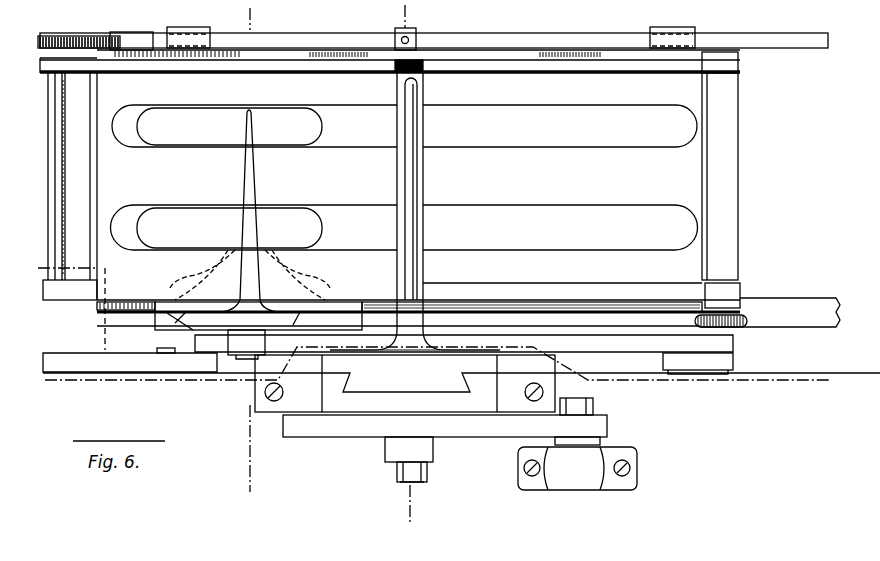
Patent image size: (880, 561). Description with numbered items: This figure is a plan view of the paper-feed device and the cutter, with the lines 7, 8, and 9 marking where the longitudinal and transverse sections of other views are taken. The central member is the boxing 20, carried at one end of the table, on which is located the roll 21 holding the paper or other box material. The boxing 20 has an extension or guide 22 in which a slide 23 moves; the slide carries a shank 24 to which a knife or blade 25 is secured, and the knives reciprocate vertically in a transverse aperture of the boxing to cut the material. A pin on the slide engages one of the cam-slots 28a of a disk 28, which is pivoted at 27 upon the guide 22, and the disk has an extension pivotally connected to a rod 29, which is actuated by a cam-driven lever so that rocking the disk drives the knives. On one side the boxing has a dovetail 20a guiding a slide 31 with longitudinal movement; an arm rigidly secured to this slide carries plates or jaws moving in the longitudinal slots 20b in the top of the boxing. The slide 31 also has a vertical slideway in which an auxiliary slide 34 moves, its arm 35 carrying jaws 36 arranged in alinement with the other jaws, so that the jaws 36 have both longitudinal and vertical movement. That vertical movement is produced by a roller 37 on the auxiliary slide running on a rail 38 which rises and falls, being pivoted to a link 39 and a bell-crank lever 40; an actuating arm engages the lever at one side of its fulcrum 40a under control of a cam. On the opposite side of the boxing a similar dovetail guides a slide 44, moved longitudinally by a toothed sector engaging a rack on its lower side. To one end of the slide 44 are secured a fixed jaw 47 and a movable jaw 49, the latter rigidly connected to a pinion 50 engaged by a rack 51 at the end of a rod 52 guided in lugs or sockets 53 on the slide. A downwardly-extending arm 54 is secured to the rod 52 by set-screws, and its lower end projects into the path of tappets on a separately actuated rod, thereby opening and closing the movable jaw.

The section line 7 7 is at (432, 321).
The section line 8 8 is at (415, 269).
The section line 9 9 is at (257, 255).
The boxing 20 is at (418, 215).
The dovetail 20a is at (401, 130).
The longitudinal slots 20b is at (653, 177).
The roll 21 is at (740, 240).
The extension or guide 22 is at (484, 405).
The slide 23 is at (461, 383).
The shank 24 is at (410, 268).
The knife or blade 25 is at (422, 233).
The pivot 27 is at (415, 470).
The disk 28 is at (345, 425).
The cam-slots 28a is at (566, 421).
The rod 29 is at (615, 452).
The slide 31 is at (767, 312).
The auxiliary slide 34 is at (170, 320).
The arm 35 is at (252, 193).
The jaws 36 is at (229, 178).
The roller 37 is at (246, 344).
The rail 38 is at (730, 340).
The link 39 is at (697, 362).
The bell-crank lever 40 is at (150, 360).
The fulcrum 40a is at (170, 365).
The slide 44 is at (578, 52).
The fixed jaw 47 is at (100, 206).
The movable jaw 49 is at (68, 179).
The pinion 50 is at (60, 38).
The rack 51 is at (118, 35).
The rod 52 is at (331, 38).
The lugs or sockets 53 is at (188, 36).
The downwardly-extending arm 54 is at (418, 35).